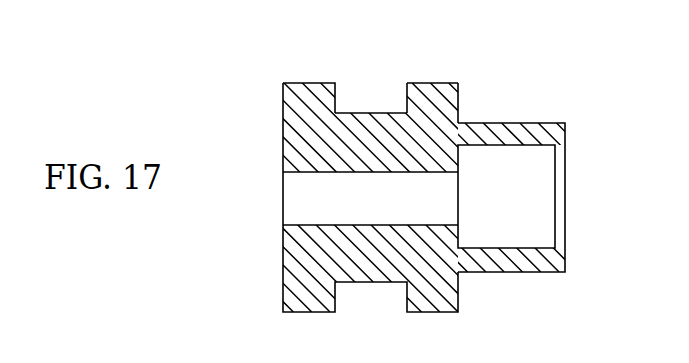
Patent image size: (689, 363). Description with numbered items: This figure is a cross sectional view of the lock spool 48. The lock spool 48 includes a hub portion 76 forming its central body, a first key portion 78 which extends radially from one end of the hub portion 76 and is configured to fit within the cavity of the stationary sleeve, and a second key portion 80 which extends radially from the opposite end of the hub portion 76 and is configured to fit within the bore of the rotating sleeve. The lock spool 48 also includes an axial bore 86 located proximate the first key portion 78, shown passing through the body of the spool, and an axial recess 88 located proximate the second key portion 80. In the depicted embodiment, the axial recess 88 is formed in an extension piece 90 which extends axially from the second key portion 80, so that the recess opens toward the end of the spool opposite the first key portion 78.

The lock spool 48 is at (520, 71).
The hub portion 76 is at (348, 113).
The first key portion 78 is at (305, 83).
The second key portion 80 is at (441, 83).
The axial bore 86 is at (365, 172).
The axial recess 88 is at (518, 148).
The extension piece 90 is at (525, 123).